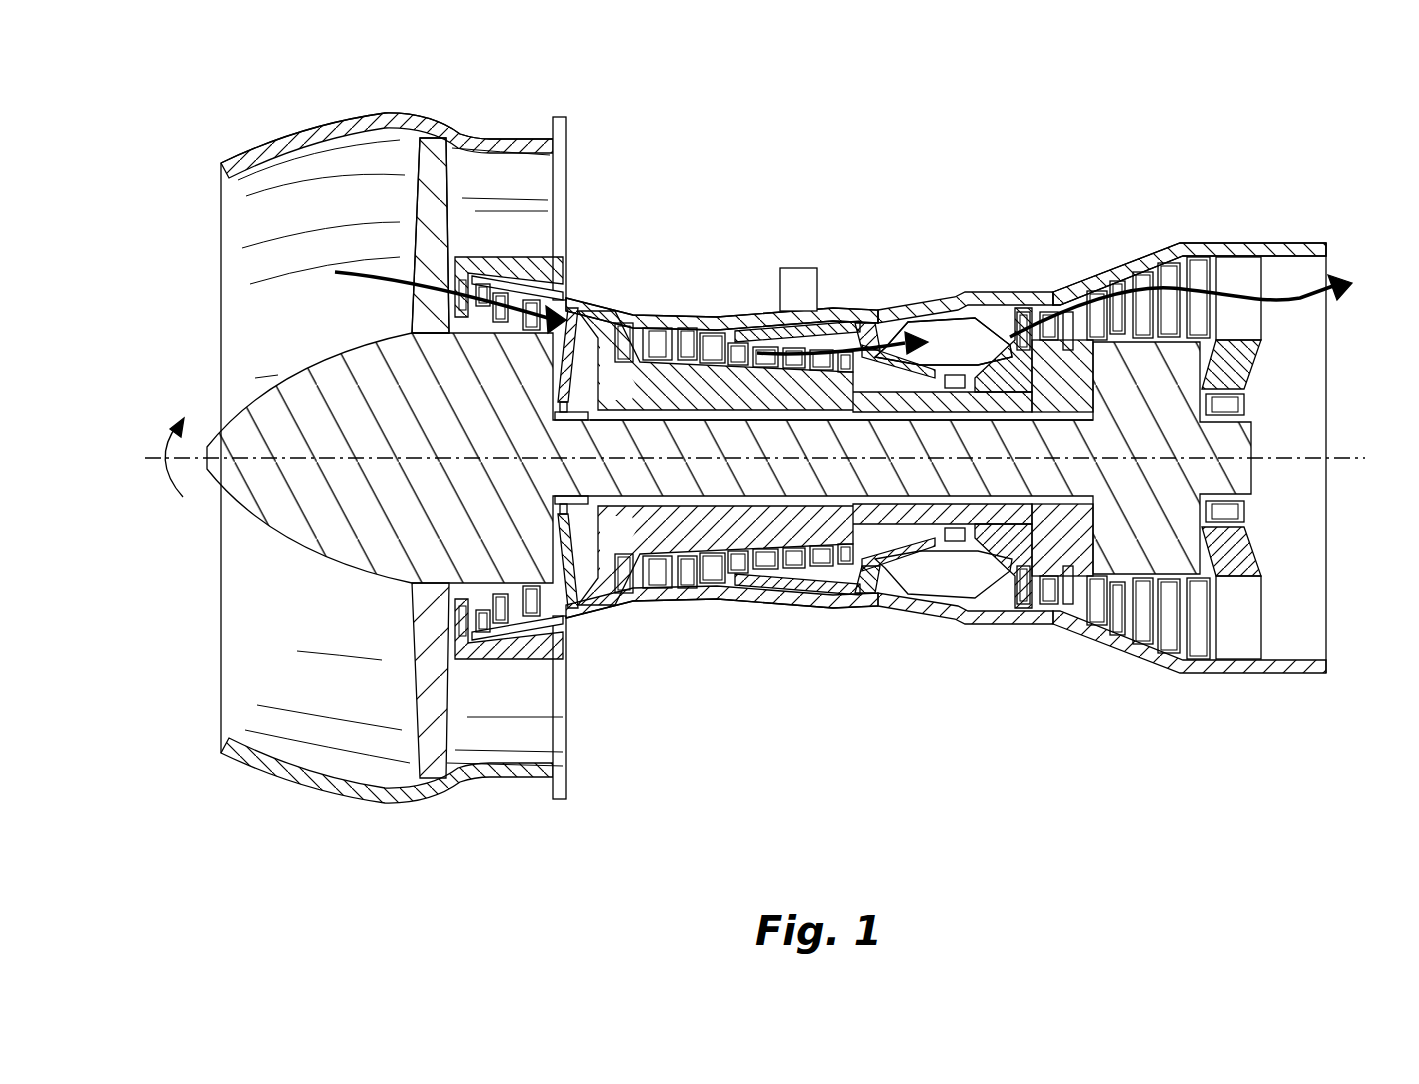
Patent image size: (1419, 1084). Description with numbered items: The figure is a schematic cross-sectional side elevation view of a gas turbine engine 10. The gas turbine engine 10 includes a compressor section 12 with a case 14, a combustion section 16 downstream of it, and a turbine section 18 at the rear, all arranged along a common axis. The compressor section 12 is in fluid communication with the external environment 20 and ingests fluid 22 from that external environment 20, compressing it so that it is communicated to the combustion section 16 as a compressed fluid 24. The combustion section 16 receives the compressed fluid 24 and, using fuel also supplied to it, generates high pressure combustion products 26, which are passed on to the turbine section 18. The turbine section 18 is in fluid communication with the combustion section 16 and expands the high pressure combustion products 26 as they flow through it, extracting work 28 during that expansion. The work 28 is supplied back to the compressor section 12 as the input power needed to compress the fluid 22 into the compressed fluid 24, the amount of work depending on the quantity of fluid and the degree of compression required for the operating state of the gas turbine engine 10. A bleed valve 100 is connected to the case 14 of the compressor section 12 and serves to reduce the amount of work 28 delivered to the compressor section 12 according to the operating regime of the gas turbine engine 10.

The gas turbine engine 10 is at (338, 888).
The compressor section 12 is at (462, 226).
The case 14 is at (660, 600).
The combustion section 16 is at (845, 226).
The turbine section 18 is at (1030, 226).
The external environment 20 is at (113, 69).
The fluid 22 is at (378, 278).
The compressed fluid 24 is at (848, 368).
The high pressure combustion products 26 is at (1290, 305).
The work 28 is at (167, 480).
The bleed valve 100 is at (779, 266).